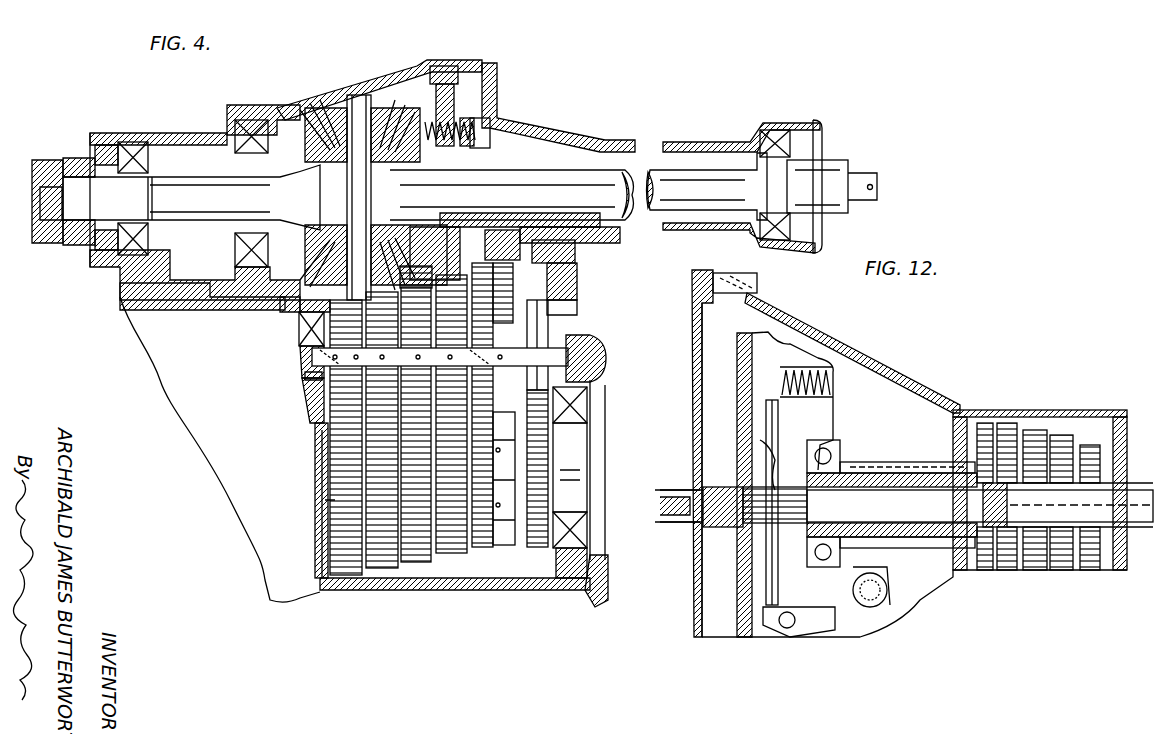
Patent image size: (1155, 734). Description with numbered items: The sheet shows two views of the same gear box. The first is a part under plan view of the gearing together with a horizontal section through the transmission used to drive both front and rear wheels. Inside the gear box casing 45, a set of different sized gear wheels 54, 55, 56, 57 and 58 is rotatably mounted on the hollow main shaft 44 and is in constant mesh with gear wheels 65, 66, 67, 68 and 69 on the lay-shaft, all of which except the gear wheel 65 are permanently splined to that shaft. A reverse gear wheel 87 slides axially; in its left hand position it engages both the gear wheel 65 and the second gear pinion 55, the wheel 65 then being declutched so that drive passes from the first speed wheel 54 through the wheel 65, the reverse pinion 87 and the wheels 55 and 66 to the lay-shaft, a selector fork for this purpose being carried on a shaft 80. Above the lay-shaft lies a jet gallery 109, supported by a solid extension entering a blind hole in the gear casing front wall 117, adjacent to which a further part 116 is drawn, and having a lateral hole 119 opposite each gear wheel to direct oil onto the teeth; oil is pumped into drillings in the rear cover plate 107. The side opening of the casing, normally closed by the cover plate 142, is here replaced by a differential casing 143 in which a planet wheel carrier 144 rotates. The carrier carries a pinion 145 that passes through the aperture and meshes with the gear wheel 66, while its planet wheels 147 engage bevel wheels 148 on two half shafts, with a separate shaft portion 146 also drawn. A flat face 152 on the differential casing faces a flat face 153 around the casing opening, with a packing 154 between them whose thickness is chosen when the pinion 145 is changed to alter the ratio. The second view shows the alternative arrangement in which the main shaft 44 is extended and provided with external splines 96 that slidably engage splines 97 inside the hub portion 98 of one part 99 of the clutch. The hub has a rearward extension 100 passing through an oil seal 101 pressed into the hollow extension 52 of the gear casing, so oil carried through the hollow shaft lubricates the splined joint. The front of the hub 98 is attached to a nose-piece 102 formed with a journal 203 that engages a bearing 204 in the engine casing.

In FIG. 4, the differential casing 143 is at (372, 87).
In FIG. 4, the pinion 145 is at (435, 80).
In FIG. 4, the planet wheel carrier 144 is at (468, 116).
In FIG. 4, the planet wheels 147 is at (330, 108).
In FIG. 4, the bevel wheels 148 is at (492, 148).
In FIG. 4, the shaft 146 is at (460, 264).
In FIG. 4, the gear box casing 45 is at (208, 305).
In FIG. 4, the flat face 152 is at (580, 248).
In FIG. 4, the packing 154 is at (572, 268).
In FIG. 4, the flat face 153 is at (580, 282).
In FIG. 4, the gear wheel 67 is at (414, 296).
In FIG. 4, the gear wheel 65 is at (500, 285).
In FIG. 4, the gear wheel 66 is at (460, 305).
In FIG. 4, the cover plate 142 is at (298, 305).
In FIG. 4, the gear wheel 69 is at (295, 320).
In FIG. 4, the gear wheel 68 is at (300, 340).
In FIG. 4, the gear casing front wall 117 is at (303, 356).
In FIG. 4, the spacer 116 is at (305, 374).
In FIG. 4, the lateral hole 119 is at (313, 420).
In FIG. 4, the shaft 80 is at (320, 462).
In FIG. 4, the rear cover plate 107 is at (606, 358).
In FIG. 4, the jet gallery 109 is at (560, 392).
In FIG. 4, the gear wheel 58 is at (352, 575).
In FIG. 4, the gear wheel 57 is at (382, 568).
In FIG. 4, the gear wheel 56 is at (418, 562).
In FIG. 4, the second gear pinion 55 is at (460, 553).
In FIG. 4, the reverse gear wheel 87 is at (518, 547).
In FIG. 4, the first speed driven wheel 54 is at (537, 560).
In FIG. 12, the splines 97 is at (718, 430).
In FIG. 12, the clutch part 99 is at (822, 362).
In FIG. 12, the external splines 96 is at (780, 495).
In FIG. 12, the hub portion 98 is at (845, 470).
In FIG. 12, the rearward extension 100 is at (905, 490).
In FIG. 12, the oil seal 101 is at (878, 478).
In FIG. 12, the nose-piece 102 is at (740, 478).
In FIG. 12, the journal 203 is at (690, 505).
In FIG. 12, the bearing 204 is at (690, 520).
In FIG. 12, the hollow extension 52 is at (950, 450).
In FIG. 12, the hollow main shaft 44 is at (1000, 470).